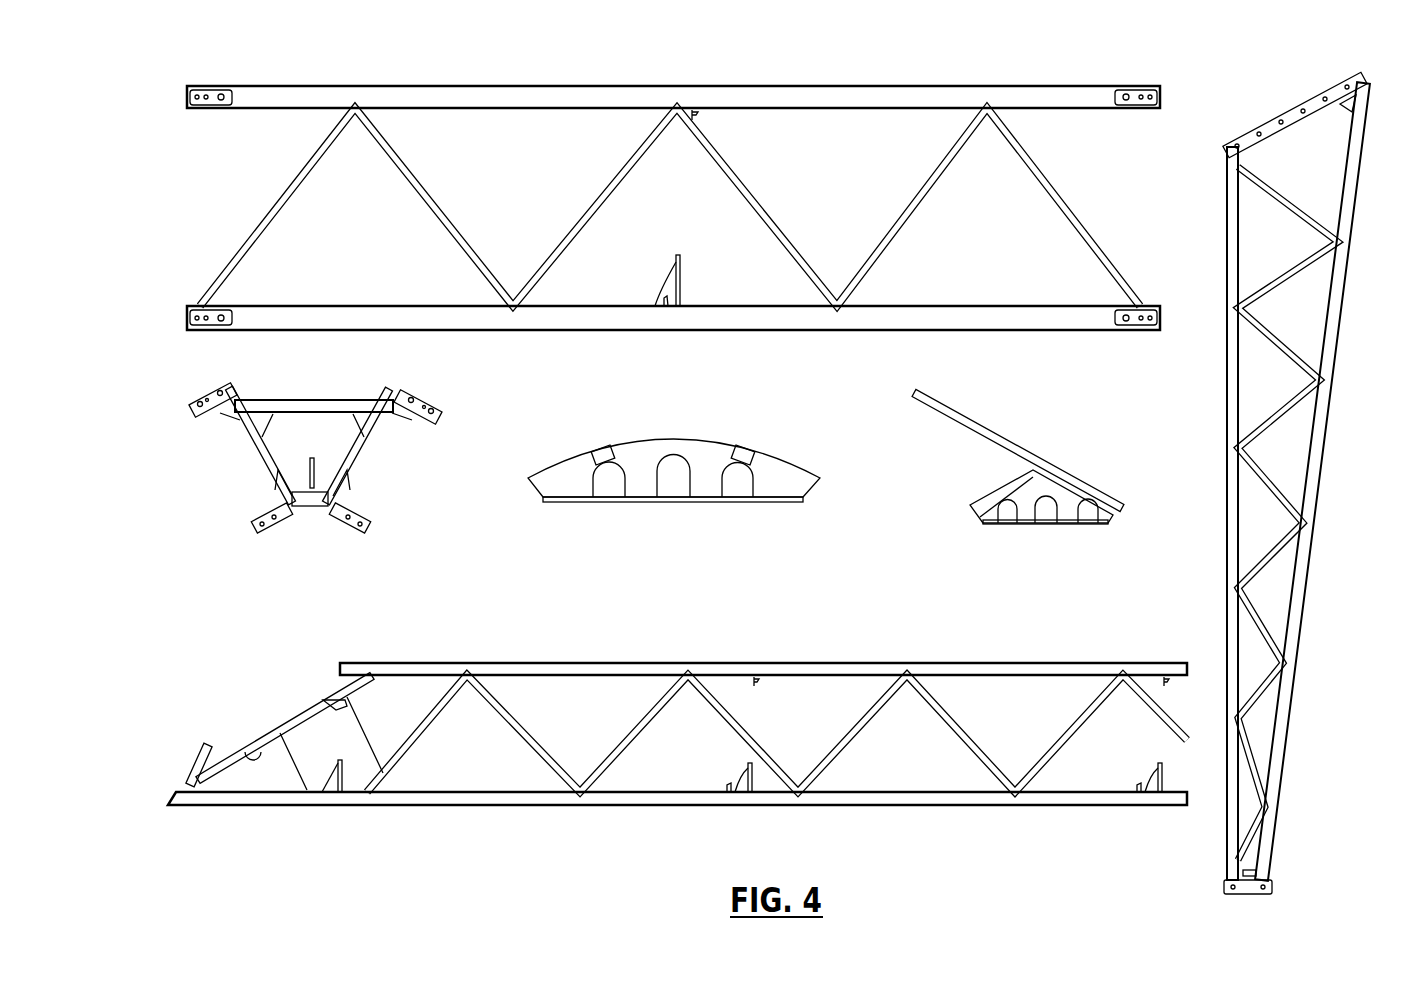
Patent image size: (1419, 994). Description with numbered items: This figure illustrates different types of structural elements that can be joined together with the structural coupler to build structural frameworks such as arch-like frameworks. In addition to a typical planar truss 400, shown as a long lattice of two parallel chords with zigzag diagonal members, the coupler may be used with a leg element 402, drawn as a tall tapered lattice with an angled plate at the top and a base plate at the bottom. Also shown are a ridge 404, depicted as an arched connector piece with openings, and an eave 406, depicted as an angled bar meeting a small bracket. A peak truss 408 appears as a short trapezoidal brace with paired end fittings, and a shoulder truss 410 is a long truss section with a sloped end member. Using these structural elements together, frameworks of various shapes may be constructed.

The planar truss 400 is at (725, 85).
The leg element 402 is at (1325, 85).
The ridge 404 is at (742, 447).
The eave 406 is at (1017, 442).
The peak truss 408 is at (437, 404).
The shoulder truss 410 is at (565, 660).